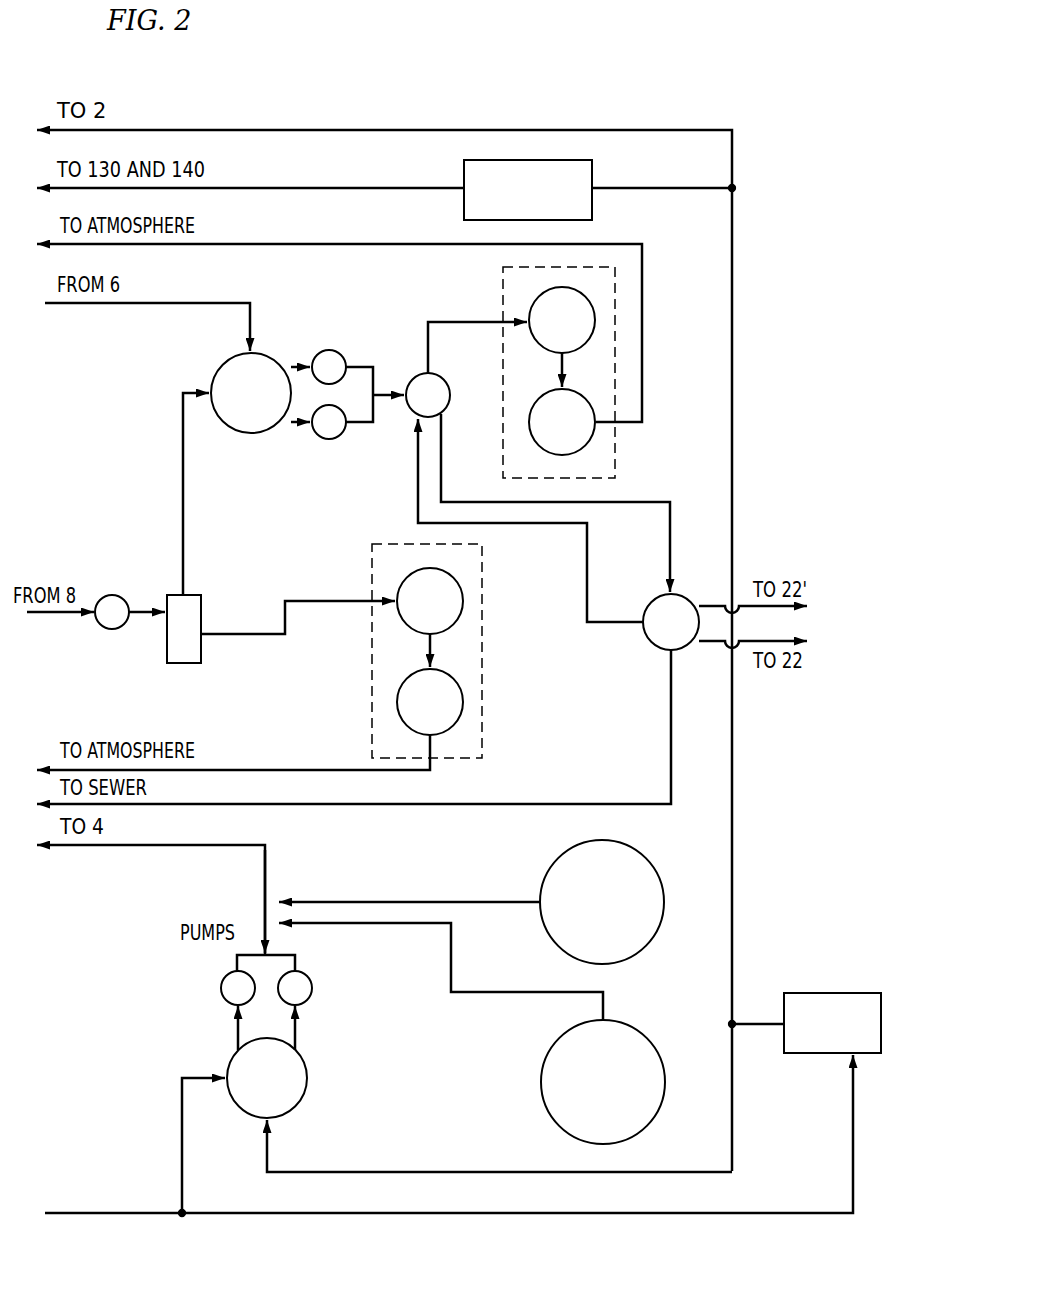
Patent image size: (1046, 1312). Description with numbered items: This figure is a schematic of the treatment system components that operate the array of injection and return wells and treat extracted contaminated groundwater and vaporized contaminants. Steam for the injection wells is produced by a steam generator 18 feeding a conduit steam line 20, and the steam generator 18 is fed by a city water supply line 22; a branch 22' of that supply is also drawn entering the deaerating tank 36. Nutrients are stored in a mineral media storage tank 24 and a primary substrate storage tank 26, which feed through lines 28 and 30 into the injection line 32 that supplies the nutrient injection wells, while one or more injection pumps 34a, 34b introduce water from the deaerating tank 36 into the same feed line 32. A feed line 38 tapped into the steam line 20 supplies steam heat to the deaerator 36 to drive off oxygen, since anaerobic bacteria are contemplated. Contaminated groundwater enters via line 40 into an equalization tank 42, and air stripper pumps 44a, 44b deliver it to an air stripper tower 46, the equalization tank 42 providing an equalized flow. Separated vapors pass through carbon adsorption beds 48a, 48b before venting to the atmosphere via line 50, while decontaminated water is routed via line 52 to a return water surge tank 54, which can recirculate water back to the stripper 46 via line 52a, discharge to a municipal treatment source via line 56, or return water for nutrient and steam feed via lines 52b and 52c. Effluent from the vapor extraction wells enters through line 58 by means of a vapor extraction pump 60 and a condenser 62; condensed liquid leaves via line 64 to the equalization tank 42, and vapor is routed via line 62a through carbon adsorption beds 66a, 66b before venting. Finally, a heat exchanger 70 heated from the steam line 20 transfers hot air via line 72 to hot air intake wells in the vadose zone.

The steam generator 18 is at (848, 995).
The conduit steam line 20 is at (282, 131).
The city water supply line 22 is at (449, 1134).
The branch supply line 22' is at (176, 1145).
The mineral media storage tank 24 is at (644, 1040).
The primary substrate storage tank 26 is at (652, 878).
The line 28 is at (394, 926).
The line 30 is at (358, 903).
The injection line 32 is at (268, 868).
The injection pump 34a is at (221, 988).
The injection pump 34b is at (312, 990).
The deaerating tank 36 is at (304, 1080).
The feed line 38 is at (355, 1173).
The line 40 is at (220, 304).
The equalization tank 42 is at (251, 434).
The air stripper pump 44a is at (331, 350).
The air stripper pump 44b is at (331, 440).
The air stripper tower 46 is at (437, 376).
The carbon adsorption bed 48a is at (530, 314).
The carbon adsorption bed 48b is at (530, 422).
The line 50 is at (283, 245).
The line 52 is at (640, 503).
The line 52a is at (588, 544).
The line 52b is at (713, 604).
The line 52c is at (704, 643).
The return water surge tank 54 is at (648, 640).
The line 56 is at (282, 805).
The line 58 is at (57, 618).
The vapor extraction pump 60 is at (116, 604).
The condenser 62 is at (205, 598).
The line 62a is at (225, 637).
The line 64 is at (184, 518).
The carbon adsorption bed 66a is at (463, 598).
The carbon adsorption bed 66b is at (463, 699).
The heat exchanger 70 is at (590, 168).
The line 72 is at (283, 189).